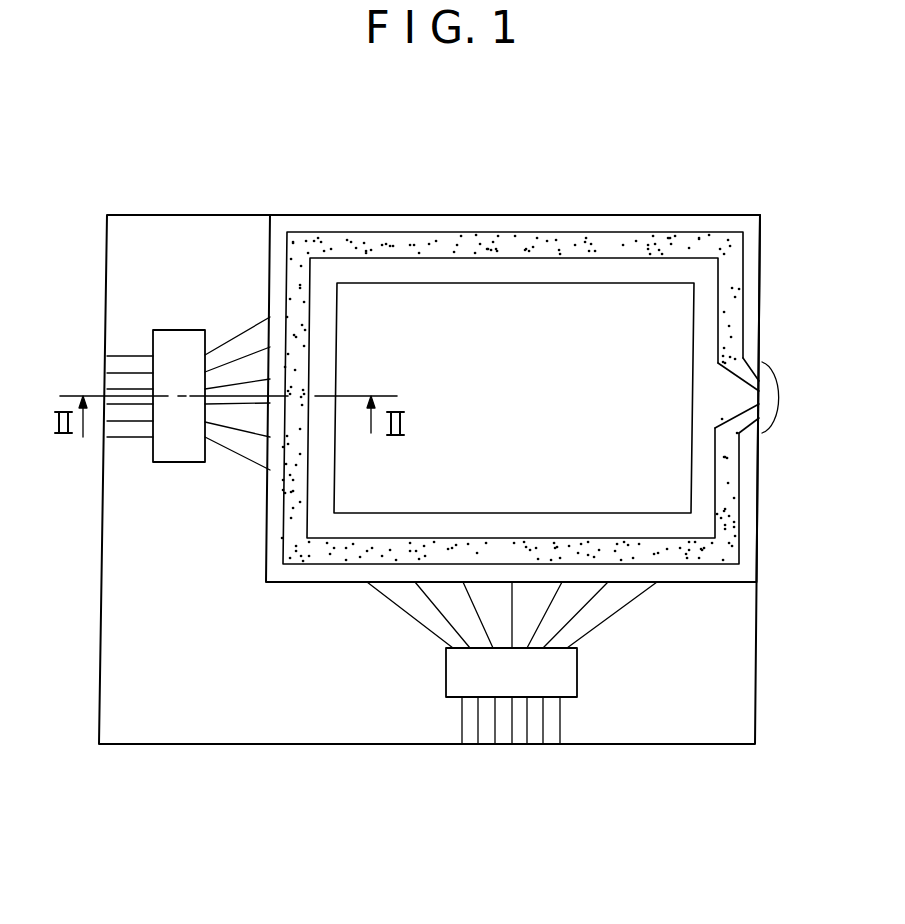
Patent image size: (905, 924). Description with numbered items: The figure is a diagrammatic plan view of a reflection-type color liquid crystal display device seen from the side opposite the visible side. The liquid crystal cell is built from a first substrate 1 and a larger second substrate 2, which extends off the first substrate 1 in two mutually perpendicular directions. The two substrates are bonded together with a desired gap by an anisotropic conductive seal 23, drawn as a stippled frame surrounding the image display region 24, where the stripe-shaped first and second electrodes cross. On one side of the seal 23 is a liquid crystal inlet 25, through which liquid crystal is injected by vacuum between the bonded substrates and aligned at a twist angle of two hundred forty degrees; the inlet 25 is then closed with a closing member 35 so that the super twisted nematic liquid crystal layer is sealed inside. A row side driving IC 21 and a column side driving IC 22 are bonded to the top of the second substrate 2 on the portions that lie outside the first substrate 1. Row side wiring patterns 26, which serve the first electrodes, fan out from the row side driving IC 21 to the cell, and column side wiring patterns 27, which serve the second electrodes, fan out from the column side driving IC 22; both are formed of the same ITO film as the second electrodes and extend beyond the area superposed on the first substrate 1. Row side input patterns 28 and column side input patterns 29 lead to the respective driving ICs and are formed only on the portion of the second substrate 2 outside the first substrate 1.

The first substrate 1 is at (755, 273).
The second substrate 2 is at (745, 657).
The row side driving IC 21 is at (177, 343).
The column side driving IC 22 is at (460, 674).
The anisotropic conductive seal 23 is at (560, 250).
The image display region 24 is at (522, 392).
The liquid crystal inlet 25 is at (740, 400).
The row side wiring patterns 26 is at (235, 457).
The column side wiring patterns 27 is at (610, 617).
The row side input patterns 28 is at (133, 356).
The column side input patterns 29 is at (513, 723).
The closing member 35 is at (767, 413).